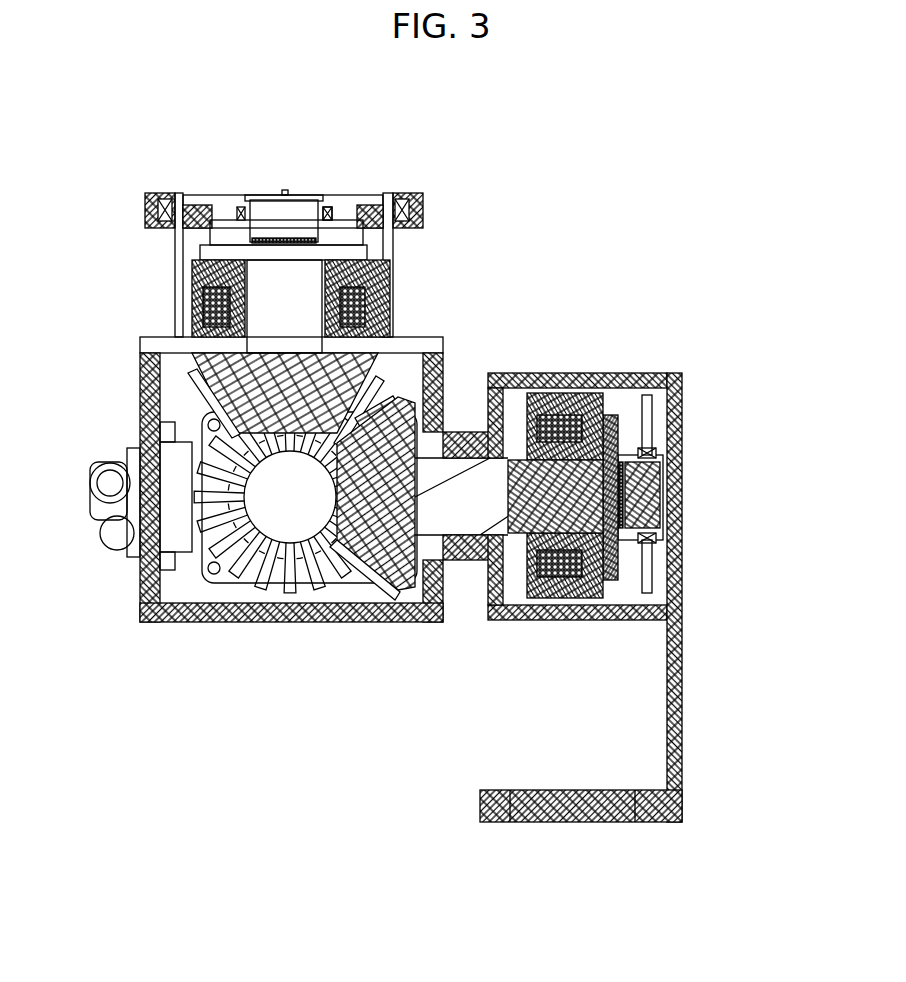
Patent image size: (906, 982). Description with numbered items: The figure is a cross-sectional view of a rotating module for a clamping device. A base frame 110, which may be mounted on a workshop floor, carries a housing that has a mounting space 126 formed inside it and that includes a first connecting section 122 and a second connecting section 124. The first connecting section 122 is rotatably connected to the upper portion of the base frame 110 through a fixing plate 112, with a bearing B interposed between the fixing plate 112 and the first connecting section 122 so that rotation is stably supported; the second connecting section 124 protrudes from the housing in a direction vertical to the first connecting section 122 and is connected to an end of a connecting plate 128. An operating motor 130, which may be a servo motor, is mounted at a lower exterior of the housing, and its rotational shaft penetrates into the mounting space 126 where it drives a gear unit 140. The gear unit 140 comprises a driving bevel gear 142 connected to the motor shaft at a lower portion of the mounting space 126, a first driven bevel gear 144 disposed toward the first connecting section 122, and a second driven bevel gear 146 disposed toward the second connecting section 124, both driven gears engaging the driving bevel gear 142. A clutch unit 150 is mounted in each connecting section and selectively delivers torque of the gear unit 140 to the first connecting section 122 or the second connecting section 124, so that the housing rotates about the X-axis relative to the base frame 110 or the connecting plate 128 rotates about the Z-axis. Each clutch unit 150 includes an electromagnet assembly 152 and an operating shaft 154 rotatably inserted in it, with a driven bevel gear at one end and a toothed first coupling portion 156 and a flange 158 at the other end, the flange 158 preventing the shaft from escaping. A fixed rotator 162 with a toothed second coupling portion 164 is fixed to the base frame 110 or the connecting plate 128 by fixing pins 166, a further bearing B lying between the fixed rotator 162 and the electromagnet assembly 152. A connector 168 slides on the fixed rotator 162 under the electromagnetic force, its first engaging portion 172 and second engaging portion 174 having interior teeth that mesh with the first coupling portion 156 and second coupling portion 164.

The base frame 110 is at (370, 200).
The fixing plate 112 is at (432, 228).
The first connecting section 122 is at (177, 296).
The second connecting section 124 is at (648, 393).
The mounting space 126 is at (167, 391).
The connecting plate 128 is at (670, 513).
The operating motor 130 is at (110, 532).
The gear unit 140 is at (301, 545).
The driving bevel gear 142 is at (282, 513).
The first driven bevel gear 144 is at (252, 405).
The second driven bevel gear 146 is at (365, 513).
The clutch unit 150 is at (403, 277).
The electromagnet assembly 152 is at (180, 320).
The operating shaft 154 is at (303, 343).
The first coupling portion 156 is at (181, 210).
The flange 158 is at (355, 253).
The fixed rotator 162 is at (322, 208).
The second coupling portion 164 is at (385, 205).
The fixing pin 166 is at (286, 212).
The connector 168 is at (262, 236).
The first engaging portion 172 is at (217, 207).
The second engaging portion 174 is at (300, 200).
The bearing B is at (236, 200).